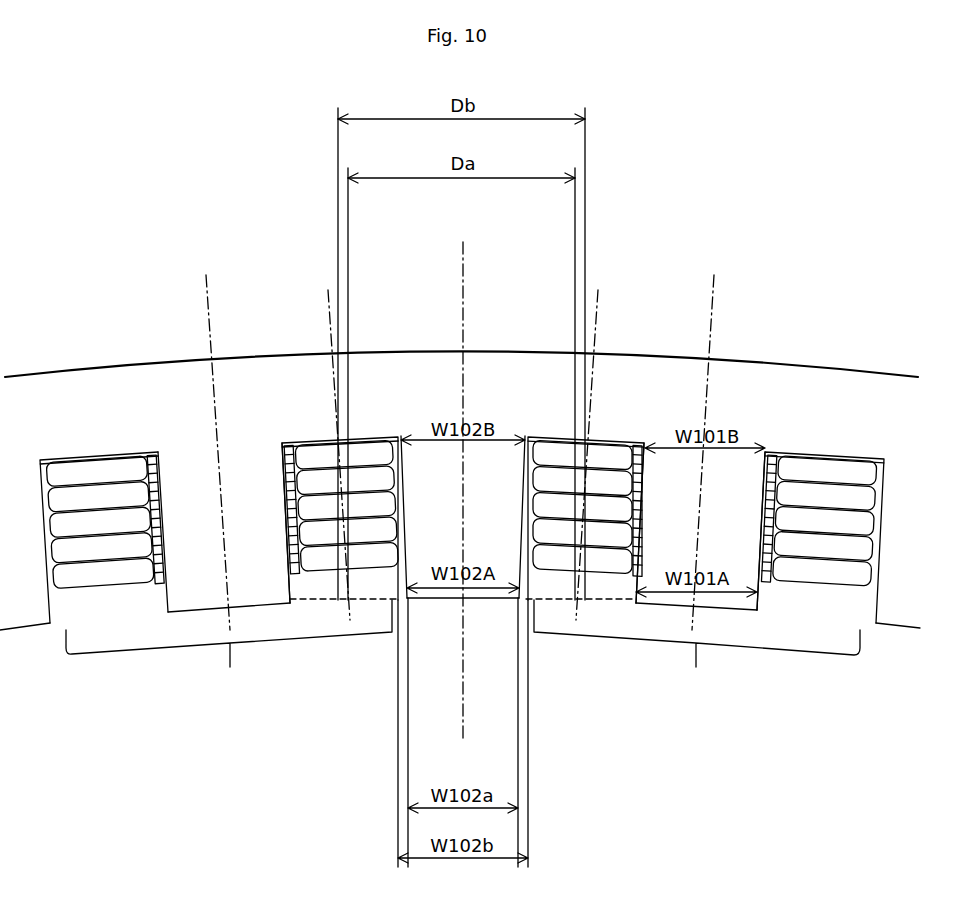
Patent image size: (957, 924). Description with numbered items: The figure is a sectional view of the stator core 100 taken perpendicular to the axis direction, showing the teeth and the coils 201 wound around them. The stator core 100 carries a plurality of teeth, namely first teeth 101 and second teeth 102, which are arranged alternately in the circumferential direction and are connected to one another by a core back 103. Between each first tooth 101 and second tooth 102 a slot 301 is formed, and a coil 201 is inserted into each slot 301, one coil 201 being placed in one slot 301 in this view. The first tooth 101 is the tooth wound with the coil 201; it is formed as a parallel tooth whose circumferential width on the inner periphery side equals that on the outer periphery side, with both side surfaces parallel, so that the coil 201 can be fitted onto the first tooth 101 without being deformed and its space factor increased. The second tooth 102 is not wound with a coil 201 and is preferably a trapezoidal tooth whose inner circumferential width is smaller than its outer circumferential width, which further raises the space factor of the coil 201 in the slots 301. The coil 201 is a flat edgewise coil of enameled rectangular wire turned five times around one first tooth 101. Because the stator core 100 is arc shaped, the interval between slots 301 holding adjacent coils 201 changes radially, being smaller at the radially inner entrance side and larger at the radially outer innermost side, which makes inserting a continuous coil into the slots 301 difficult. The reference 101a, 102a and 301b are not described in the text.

The stator core 100 is at (848, 289).
The first tooth 101 is at (209, 521).
The tip of first tooth 101a is at (192, 614).
The second tooth 102 is at (448, 521).
The tip of second tooth 102a is at (490, 600).
The core back 103 is at (250, 378).
The coil 201 is at (463, 647).
The slot 301 is at (55, 488).
The coil end portion 301b is at (112, 468).